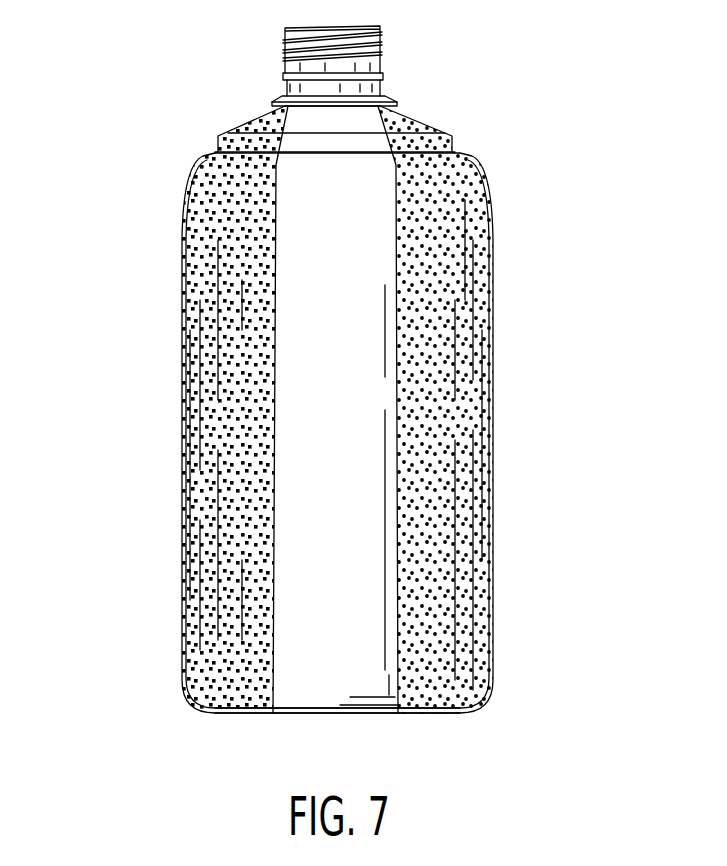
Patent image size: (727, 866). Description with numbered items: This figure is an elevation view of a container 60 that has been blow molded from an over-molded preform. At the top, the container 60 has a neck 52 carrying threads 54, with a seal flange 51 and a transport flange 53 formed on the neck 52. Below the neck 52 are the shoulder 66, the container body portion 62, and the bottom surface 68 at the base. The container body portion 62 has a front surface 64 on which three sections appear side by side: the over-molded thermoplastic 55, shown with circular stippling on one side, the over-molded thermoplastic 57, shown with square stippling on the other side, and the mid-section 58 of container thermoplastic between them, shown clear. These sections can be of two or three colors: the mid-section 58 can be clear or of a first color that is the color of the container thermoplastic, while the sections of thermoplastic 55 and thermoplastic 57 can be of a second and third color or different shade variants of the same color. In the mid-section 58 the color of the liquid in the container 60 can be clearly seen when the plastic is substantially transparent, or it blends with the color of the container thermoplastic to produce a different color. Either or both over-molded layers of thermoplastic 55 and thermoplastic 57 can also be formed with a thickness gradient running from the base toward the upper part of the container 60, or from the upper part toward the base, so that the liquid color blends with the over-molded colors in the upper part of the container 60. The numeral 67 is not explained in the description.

The container 60 is at (514, 219).
The shoulder 66 is at (450, 138).
The thermoplastic 57 is at (190, 488).
The container body portion 62 is at (488, 335).
The thermoplastic 55 is at (460, 467).
The front surface 64 is at (322, 208).
The mid-section 58 is at (318, 337).
The panel edge 67 is at (303, 181).
The transport flange 53 is at (275, 105).
The neck 52 is at (380, 88).
The seal flange 51 is at (283, 80).
The threads 54 is at (378, 33).
The bottom surface 68 is at (455, 713).